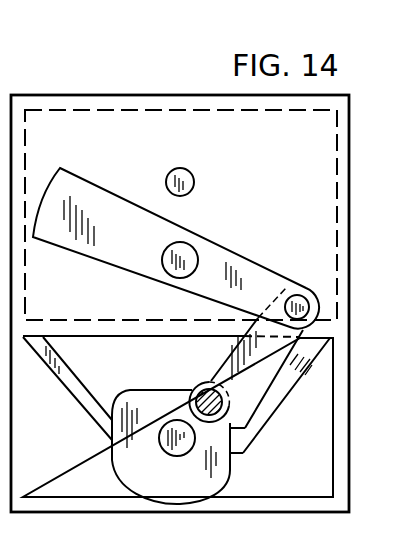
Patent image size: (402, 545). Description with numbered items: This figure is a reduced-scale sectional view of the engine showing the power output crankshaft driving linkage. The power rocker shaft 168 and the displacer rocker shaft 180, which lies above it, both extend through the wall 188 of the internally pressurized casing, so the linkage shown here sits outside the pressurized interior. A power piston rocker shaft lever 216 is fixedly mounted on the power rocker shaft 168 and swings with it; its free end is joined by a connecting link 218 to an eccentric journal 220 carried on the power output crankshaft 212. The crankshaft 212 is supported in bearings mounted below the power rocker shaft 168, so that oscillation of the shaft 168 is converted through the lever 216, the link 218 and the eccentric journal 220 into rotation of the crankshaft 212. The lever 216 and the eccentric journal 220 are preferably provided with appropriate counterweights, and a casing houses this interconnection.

The power rocker shaft 168 is at (207, 250).
The displacer rocker shaft 180 is at (180, 168).
The wall of pressurized casing 188 is at (298, 188).
The power output crankshaft 212 is at (177, 457).
The power piston rocker shaft lever 216 is at (137, 207).
The connecting link 218 is at (262, 373).
The eccentric journal 220 is at (193, 391).